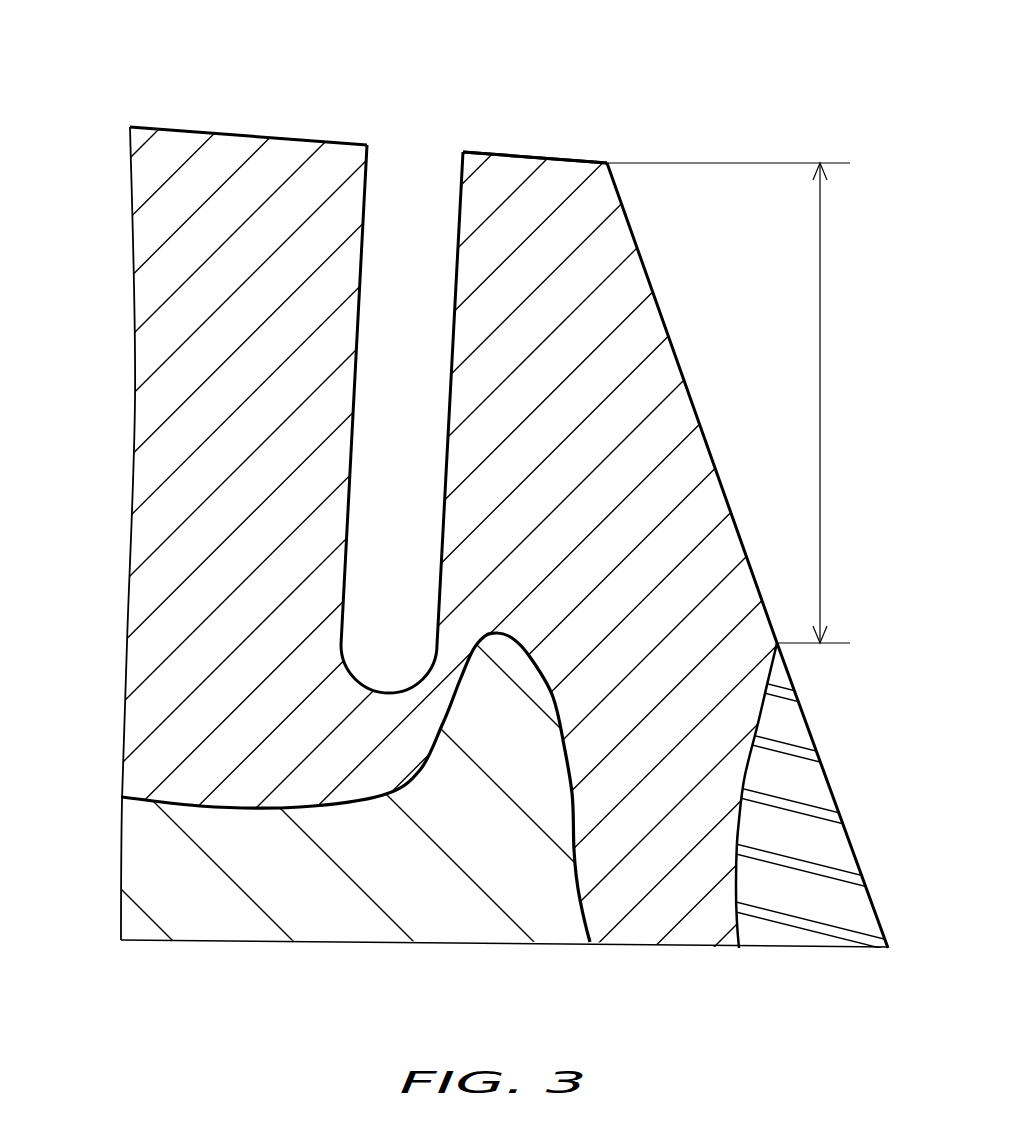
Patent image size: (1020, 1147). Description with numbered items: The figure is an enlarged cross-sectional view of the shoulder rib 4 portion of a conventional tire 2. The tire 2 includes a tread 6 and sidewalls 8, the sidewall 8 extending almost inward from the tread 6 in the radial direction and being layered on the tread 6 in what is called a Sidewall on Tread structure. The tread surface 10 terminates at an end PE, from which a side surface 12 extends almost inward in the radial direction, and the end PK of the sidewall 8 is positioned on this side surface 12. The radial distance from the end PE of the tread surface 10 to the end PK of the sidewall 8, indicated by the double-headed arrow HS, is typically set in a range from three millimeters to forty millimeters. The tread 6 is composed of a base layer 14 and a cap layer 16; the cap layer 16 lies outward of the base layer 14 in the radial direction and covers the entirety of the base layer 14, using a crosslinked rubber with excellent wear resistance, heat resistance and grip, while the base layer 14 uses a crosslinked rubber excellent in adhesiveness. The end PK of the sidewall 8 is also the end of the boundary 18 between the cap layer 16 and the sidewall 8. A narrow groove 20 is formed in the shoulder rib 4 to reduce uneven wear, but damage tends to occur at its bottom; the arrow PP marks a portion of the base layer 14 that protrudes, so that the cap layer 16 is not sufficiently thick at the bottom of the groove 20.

The tire 2 is at (722, 152).
The shoulder rib 4 is at (152, 115).
The tread 6 is at (255, 143).
The sidewall 8 is at (812, 798).
The tread surface 10 is at (518, 155).
The side surface 12 is at (670, 320).
The base layer 14 is at (150, 838).
The cap layer 16 is at (160, 352).
The boundary 18 is at (730, 847).
The narrow groove 20 is at (367, 185).
The end of tread surface PE is at (607, 163).
The end of sidewall PK is at (777, 643).
The protruding portion of base layer PP is at (482, 630).
The radial distance HS is at (837, 403).